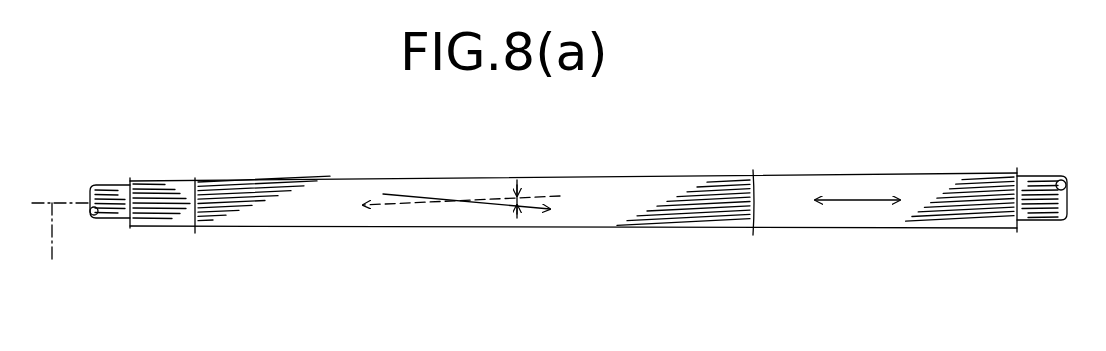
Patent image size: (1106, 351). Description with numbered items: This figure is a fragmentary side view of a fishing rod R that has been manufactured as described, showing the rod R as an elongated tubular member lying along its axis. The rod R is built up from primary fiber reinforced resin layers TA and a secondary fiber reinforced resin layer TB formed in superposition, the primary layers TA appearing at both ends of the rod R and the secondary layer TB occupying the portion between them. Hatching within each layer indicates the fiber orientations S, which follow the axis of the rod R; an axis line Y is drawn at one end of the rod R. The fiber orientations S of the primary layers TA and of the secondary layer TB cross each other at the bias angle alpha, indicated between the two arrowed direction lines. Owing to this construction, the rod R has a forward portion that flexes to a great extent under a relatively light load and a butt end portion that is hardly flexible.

The rod R is at (697, 172).
The primary fiber reinforced resin layers TA is at (1042, 218).
The secondary fiber reinforced resin layer TB is at (817, 176).
The fiber orientations S is at (489, 196).
The axis Y is at (60, 252).